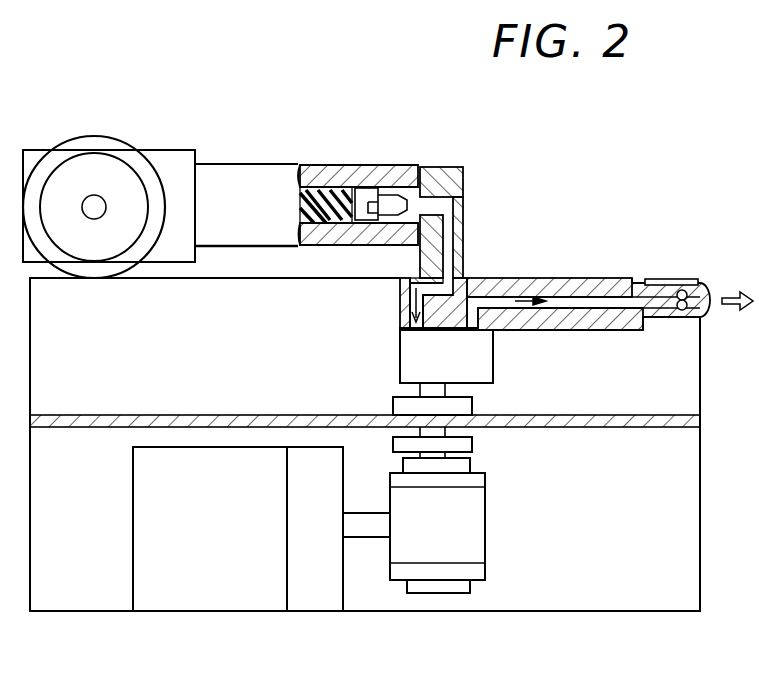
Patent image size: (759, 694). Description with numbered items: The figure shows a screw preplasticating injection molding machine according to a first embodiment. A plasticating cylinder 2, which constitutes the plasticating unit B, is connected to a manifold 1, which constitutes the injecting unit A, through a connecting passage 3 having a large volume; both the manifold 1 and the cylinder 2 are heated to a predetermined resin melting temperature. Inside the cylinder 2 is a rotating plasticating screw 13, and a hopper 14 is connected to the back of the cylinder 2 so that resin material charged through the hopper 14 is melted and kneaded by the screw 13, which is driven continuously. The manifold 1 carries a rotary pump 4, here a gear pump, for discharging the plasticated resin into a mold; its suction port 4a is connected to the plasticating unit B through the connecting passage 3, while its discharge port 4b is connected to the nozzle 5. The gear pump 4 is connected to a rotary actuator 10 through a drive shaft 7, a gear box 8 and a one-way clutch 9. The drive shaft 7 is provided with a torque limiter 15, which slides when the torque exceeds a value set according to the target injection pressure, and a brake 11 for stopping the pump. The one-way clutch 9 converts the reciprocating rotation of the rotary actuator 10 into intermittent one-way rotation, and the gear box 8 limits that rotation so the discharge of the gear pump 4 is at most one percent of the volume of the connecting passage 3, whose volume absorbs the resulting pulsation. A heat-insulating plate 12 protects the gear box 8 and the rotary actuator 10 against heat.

The manifold 1 is at (546, 276).
The plasticating cylinder 2 is at (380, 165).
The connecting passage 3 is at (465, 203).
The rotary pump 4 is at (478, 355).
The suction port 4a is at (399, 300).
The discharge port 4b is at (585, 332).
The nozzle 5 is at (666, 283).
The drive shaft 7 is at (478, 428).
The gear box 8 is at (487, 540).
The one-way clutch 9 is at (313, 598).
The rotary actuator 10 is at (212, 598).
The brake 11 is at (472, 442).
The heat-insulating plate 12 is at (158, 415).
The plasticating screw 13 is at (325, 167).
The hopper 14 is at (99, 140).
The torque limiter 15 is at (393, 405).
The injecting unit A is at (597, 252).
The plasticating unit B is at (249, 155).